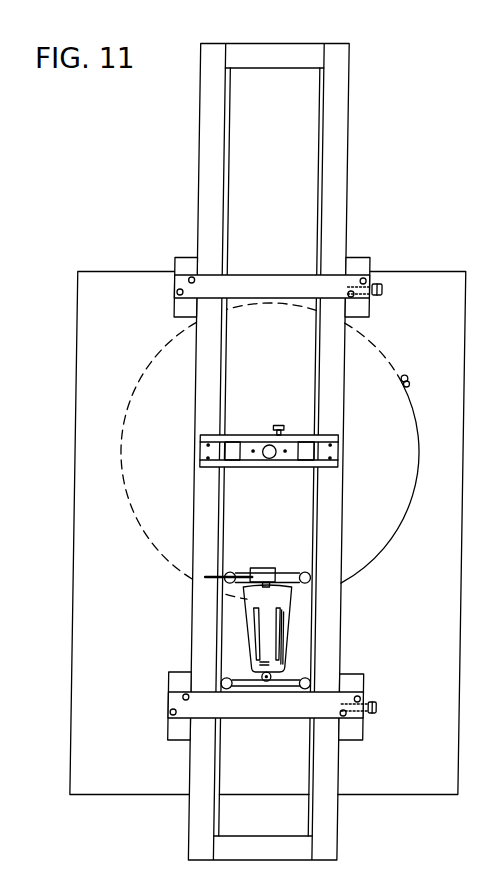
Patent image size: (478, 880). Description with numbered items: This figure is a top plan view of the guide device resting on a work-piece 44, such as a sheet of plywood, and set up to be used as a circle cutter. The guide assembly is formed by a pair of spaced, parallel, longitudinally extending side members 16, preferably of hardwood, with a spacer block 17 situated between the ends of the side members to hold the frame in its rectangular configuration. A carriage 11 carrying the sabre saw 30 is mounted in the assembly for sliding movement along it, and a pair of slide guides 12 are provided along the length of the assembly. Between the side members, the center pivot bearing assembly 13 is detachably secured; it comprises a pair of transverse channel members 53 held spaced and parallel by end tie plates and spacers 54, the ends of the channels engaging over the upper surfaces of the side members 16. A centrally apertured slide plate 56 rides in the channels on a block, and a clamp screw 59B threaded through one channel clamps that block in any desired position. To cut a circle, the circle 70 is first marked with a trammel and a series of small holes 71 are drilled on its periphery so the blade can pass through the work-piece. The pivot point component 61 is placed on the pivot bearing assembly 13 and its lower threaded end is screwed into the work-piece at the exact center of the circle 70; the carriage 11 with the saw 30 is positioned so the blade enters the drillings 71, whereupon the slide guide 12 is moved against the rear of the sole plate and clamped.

The carriage 11 is at (234, 646).
The slide guide 12 is at (247, 276).
The center pivot bearing assembly 13 is at (243, 436).
The side member 16 is at (334, 170).
The spacer block 17 is at (258, 57).
The sabre saw 30 is at (268, 632).
The work-piece 44 is at (104, 274).
The transverse channel member 53 is at (255, 467).
The end tie plates and spacers 54 is at (207, 450).
The slide plate 56 is at (292, 466).
The clamp screw 59B is at (278, 428).
The pivot point component 61 is at (277, 448).
The circle 70 is at (390, 540).
The small holes 71 is at (408, 375).